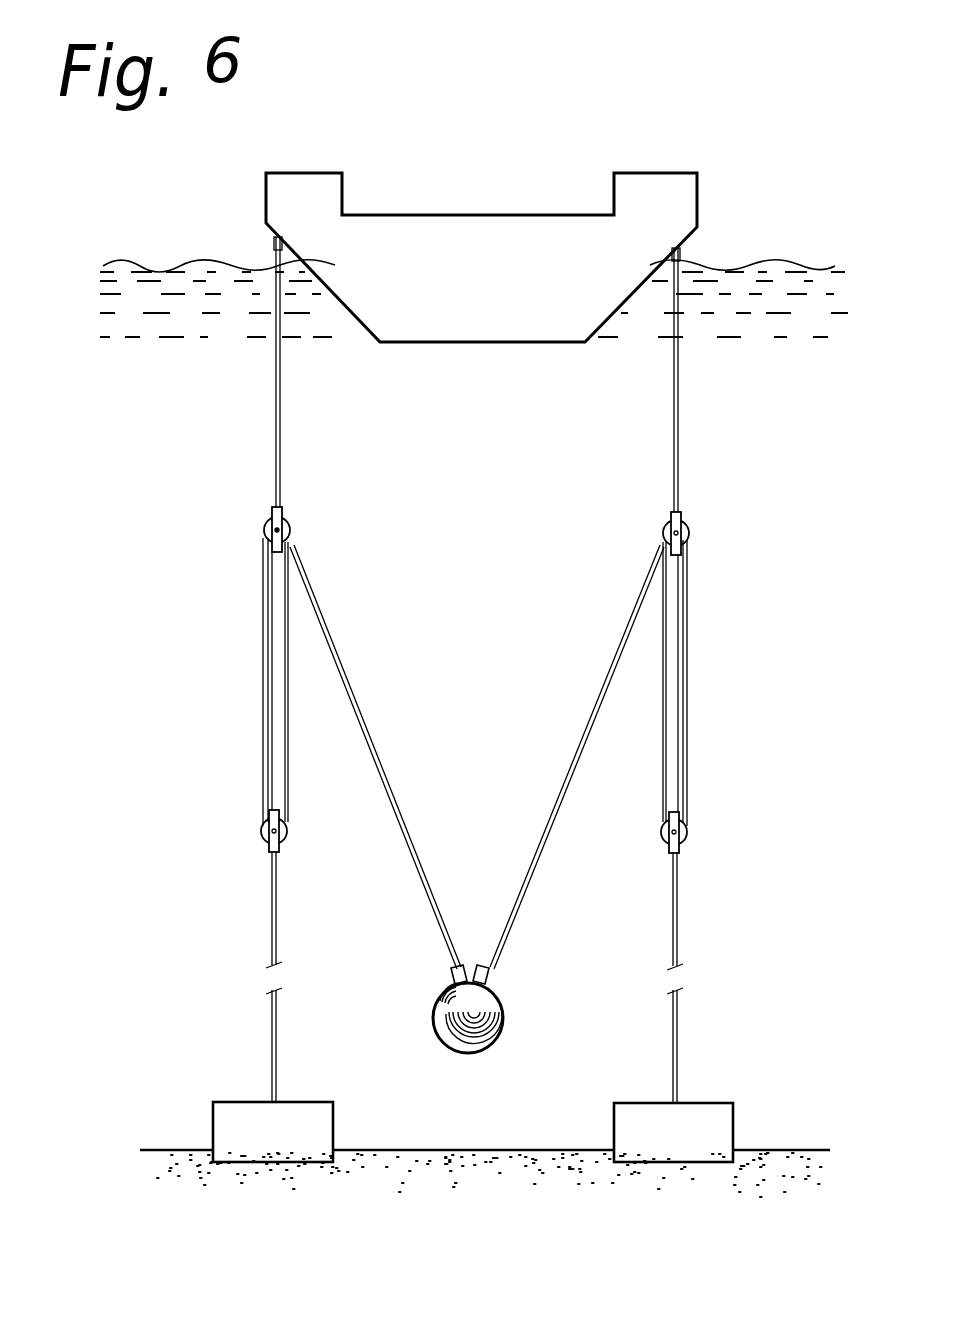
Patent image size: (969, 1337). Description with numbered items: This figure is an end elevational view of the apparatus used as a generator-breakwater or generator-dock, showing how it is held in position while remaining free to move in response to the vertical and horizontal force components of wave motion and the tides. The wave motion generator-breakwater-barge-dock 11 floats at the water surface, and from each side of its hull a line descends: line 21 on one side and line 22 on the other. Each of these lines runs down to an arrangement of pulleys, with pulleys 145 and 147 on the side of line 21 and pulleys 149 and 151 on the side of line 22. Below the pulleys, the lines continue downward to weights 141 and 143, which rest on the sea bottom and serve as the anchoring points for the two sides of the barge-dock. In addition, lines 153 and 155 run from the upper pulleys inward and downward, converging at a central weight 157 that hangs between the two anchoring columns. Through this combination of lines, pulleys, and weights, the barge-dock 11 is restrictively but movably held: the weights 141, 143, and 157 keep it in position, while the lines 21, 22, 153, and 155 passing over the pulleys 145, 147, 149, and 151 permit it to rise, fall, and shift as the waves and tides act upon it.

The wave motion generator-breakwater-barge-dock 11 is at (260, 204).
The line 21 is at (274, 442).
The line 22 is at (680, 445).
The weight 141 is at (227, 1106).
The weight 143 is at (637, 1106).
The pulley 145 is at (268, 528).
The pulley 147 is at (262, 831).
The pulley 149 is at (682, 527).
The pulley 151 is at (684, 830).
The line 153 is at (329, 634).
The line 155 is at (620, 633).
The weight 157 is at (504, 1005).